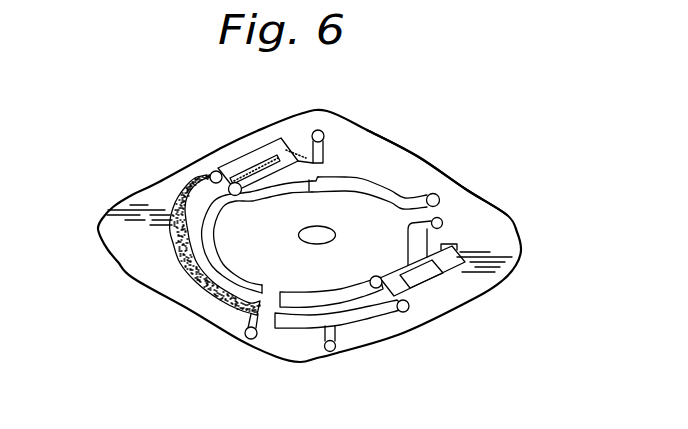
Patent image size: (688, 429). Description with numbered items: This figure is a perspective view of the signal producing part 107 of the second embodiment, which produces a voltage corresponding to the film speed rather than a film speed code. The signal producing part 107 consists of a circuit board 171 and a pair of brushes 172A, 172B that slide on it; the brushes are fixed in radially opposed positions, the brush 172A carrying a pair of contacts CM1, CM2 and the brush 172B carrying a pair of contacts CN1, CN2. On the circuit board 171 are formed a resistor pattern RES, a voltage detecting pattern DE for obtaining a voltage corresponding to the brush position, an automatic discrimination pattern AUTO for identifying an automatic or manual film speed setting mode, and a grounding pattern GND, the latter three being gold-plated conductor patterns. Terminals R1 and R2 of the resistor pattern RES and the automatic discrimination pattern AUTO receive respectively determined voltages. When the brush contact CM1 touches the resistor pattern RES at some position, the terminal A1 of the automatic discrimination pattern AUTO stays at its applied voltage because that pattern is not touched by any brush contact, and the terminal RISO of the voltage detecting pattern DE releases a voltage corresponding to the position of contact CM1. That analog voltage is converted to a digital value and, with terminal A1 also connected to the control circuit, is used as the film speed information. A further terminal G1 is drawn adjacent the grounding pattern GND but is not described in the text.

The signal producing part 107 is at (420, 154).
The circuit board 171 is at (472, 199).
The brush 172A is at (277, 148).
The brush 172B is at (463, 268).
The resistor pattern RES is at (175, 258).
The brush contact CM1 is at (212, 172).
The brush contact CM2 is at (240, 196).
The terminal of the resistor pattern R1 is at (323, 130).
The terminal of the resistor pattern R2 is at (243, 338).
The terminal of the voltage detecting pattern RISO is at (431, 193).
The voltage detecting pattern DE is at (323, 195).
The terminal of the automatic discrimination pattern A1 is at (444, 223).
The automatic discrimination pattern AUTO is at (300, 291).
The grounding pattern GND is at (293, 330).
The brush contact CN1 is at (399, 312).
The brush contact CN2 is at (373, 278).
The ground terminal G1 is at (336, 352).